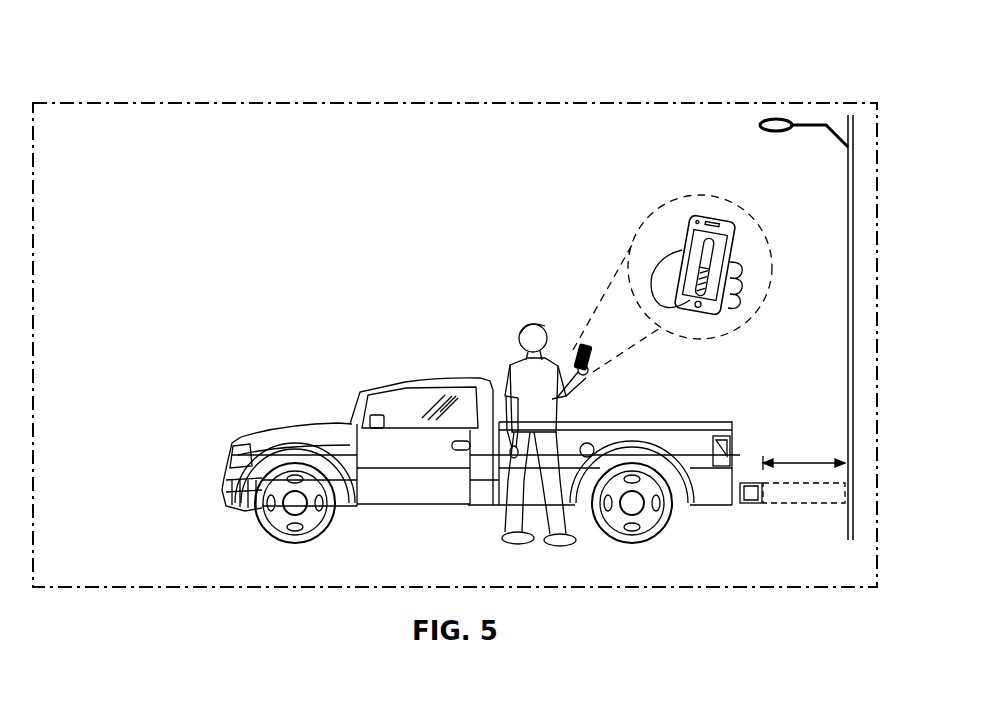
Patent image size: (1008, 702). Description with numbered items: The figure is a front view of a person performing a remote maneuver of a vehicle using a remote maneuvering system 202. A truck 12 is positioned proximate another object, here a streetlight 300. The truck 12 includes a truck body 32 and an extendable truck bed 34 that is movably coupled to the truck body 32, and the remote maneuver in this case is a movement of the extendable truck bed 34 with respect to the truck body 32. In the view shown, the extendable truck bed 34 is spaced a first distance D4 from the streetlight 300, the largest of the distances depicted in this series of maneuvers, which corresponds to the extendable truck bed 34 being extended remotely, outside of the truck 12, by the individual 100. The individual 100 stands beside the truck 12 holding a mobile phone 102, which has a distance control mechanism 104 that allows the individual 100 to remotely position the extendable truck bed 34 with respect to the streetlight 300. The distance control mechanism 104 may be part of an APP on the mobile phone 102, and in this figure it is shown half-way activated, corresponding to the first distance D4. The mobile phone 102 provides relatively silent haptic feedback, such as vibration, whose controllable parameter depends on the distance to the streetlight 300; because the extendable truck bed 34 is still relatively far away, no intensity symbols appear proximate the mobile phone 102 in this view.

The remote maneuvering system 202 is at (126, 68).
The truck 12 is at (298, 414).
The truck body 32 is at (400, 490).
The extendable truck bed 34 is at (748, 504).
The individual 100 is at (534, 324).
The mobile phone 102 is at (714, 216).
The distance control mechanism 104 is at (736, 286).
The streetlight 300 is at (848, 226).
The first distance D4 is at (797, 460).